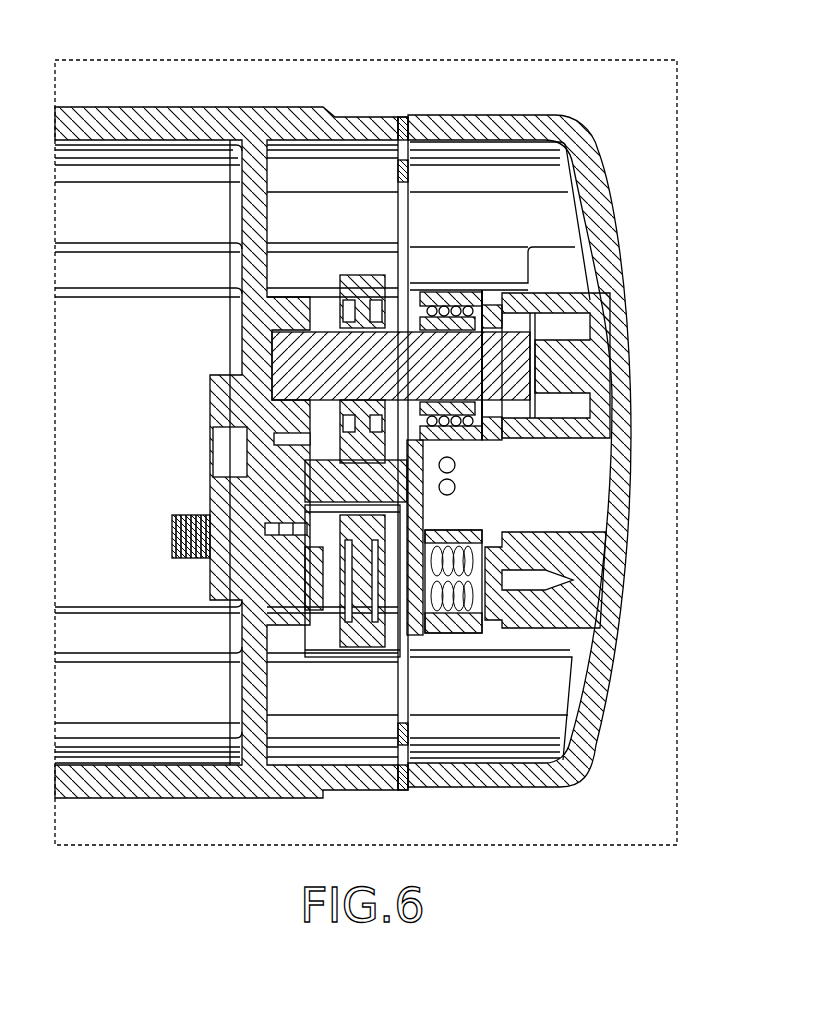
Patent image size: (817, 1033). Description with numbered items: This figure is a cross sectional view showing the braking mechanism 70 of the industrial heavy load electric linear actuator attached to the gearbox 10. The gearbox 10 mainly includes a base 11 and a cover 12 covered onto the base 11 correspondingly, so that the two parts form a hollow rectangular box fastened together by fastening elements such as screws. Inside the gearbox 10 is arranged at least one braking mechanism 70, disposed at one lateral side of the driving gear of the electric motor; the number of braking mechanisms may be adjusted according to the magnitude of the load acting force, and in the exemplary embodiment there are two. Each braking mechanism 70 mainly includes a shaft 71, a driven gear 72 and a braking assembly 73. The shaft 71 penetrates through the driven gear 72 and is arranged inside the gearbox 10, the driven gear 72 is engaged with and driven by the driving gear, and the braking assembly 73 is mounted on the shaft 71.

The gearbox 10 is at (495, 102).
The base 11 is at (312, 108).
The cover 12 is at (587, 168).
The braking mechanism 70 is at (740, 198).
The shaft 71 is at (497, 357).
The driven gear 72 is at (365, 290).
The braking assembly 73 is at (474, 289).